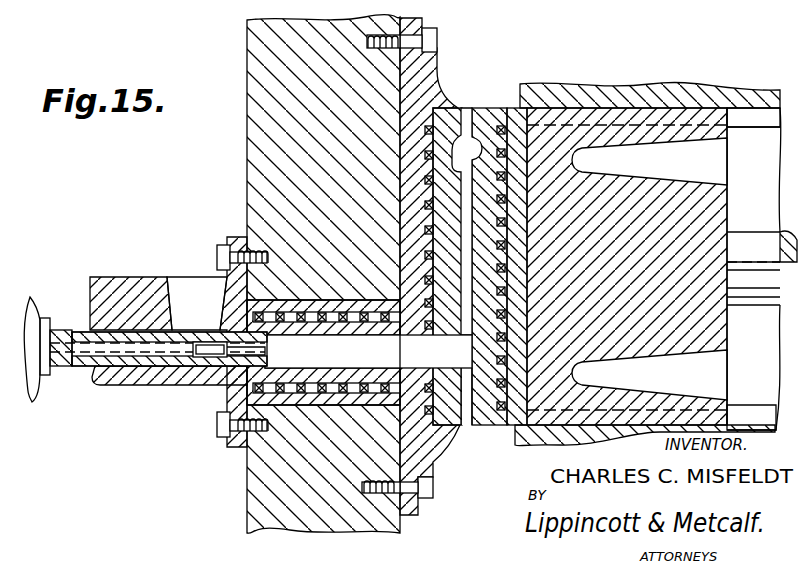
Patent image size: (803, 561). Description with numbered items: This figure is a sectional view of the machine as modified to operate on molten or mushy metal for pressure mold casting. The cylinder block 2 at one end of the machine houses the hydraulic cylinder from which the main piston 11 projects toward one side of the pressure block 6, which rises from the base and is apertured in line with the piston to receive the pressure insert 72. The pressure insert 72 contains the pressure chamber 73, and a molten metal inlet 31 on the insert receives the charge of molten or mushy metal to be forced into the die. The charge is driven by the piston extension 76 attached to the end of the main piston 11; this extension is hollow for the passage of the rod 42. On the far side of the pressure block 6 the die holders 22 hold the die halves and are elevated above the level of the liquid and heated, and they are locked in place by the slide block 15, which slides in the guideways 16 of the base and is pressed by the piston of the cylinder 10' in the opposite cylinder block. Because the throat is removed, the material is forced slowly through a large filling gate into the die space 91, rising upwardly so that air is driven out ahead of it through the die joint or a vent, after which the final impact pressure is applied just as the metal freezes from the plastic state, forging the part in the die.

The cylinder block 2 is at (672, 92).
The pressure block 6 is at (268, 80).
The cylinder 10' is at (762, 269).
The main piston 11 is at (32, 305).
The slide block 15 is at (555, 145).
The guideways 16 is at (752, 112).
The die holders 22 is at (448, 122).
The molten metal inlet 31 is at (137, 292).
The rod 42 is at (85, 338).
The pressure insert 72 is at (250, 388).
The pressure chamber 73 is at (348, 364).
The piston extension 76 is at (62, 372).
The die space 91 is at (468, 150).